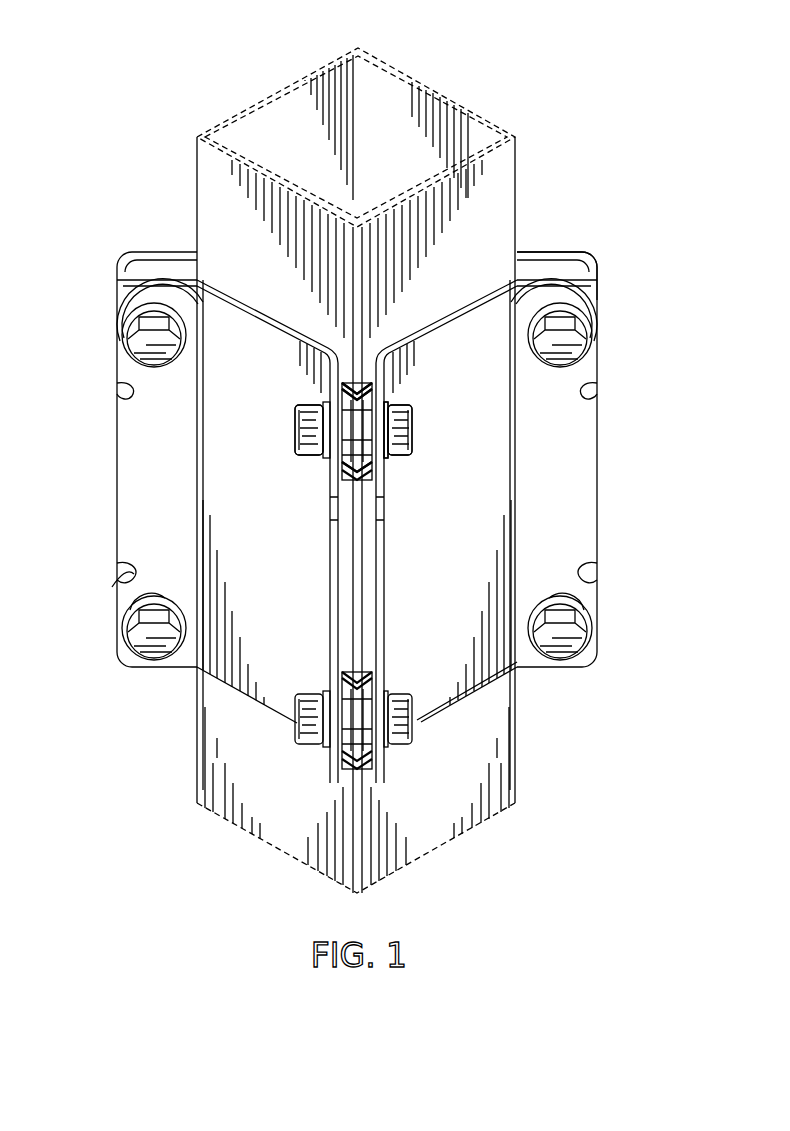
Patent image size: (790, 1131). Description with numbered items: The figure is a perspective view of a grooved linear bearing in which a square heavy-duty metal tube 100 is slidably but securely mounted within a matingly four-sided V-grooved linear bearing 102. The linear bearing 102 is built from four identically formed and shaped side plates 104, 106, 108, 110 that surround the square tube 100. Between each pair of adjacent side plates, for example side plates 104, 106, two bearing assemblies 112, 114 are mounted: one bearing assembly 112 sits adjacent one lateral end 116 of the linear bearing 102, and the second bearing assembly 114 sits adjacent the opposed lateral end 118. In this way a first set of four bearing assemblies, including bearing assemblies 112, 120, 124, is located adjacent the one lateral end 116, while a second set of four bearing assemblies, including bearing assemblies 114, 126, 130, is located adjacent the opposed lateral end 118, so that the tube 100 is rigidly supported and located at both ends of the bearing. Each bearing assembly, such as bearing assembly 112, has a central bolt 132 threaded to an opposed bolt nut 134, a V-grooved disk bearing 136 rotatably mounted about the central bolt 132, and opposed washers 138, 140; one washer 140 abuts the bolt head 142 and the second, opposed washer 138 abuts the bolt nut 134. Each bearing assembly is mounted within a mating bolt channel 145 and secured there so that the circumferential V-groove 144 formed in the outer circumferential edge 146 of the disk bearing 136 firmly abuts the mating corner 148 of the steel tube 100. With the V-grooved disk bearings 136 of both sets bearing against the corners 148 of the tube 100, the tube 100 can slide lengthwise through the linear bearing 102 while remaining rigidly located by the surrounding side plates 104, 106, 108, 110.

The square heavy-duty metal tube 100 is at (515, 185).
The V-grooved linear bearing 102 is at (598, 538).
The side plate 104 is at (265, 672).
The side plate 106 is at (500, 670).
The side plate 108 is at (560, 253).
The side plate 110 is at (165, 252).
The bearing assembly 112 is at (412, 416).
The bearing assembly 114 is at (415, 738).
The lateral end 116 is at (222, 286).
The opposed lateral end 118 is at (460, 697).
The bearing assembly 120 is at (588, 362).
The bearing assembly 124 is at (128, 352).
The bearing assembly 126 is at (588, 630).
The bearing assembly 130 is at (130, 638).
The central bolt 132 is at (412, 434).
The bolt nut 134 is at (298, 428).
The V-grooved disk bearing 136 is at (380, 477).
The washer 138 is at (340, 392).
The washer 140 is at (380, 395).
The bolt head 142 is at (412, 452).
The circumferential V-groove 144 is at (358, 390).
The bolt channel 145 is at (112, 587).
The outer circumferential edge 146 is at (340, 467).
The corner 148 is at (360, 252).